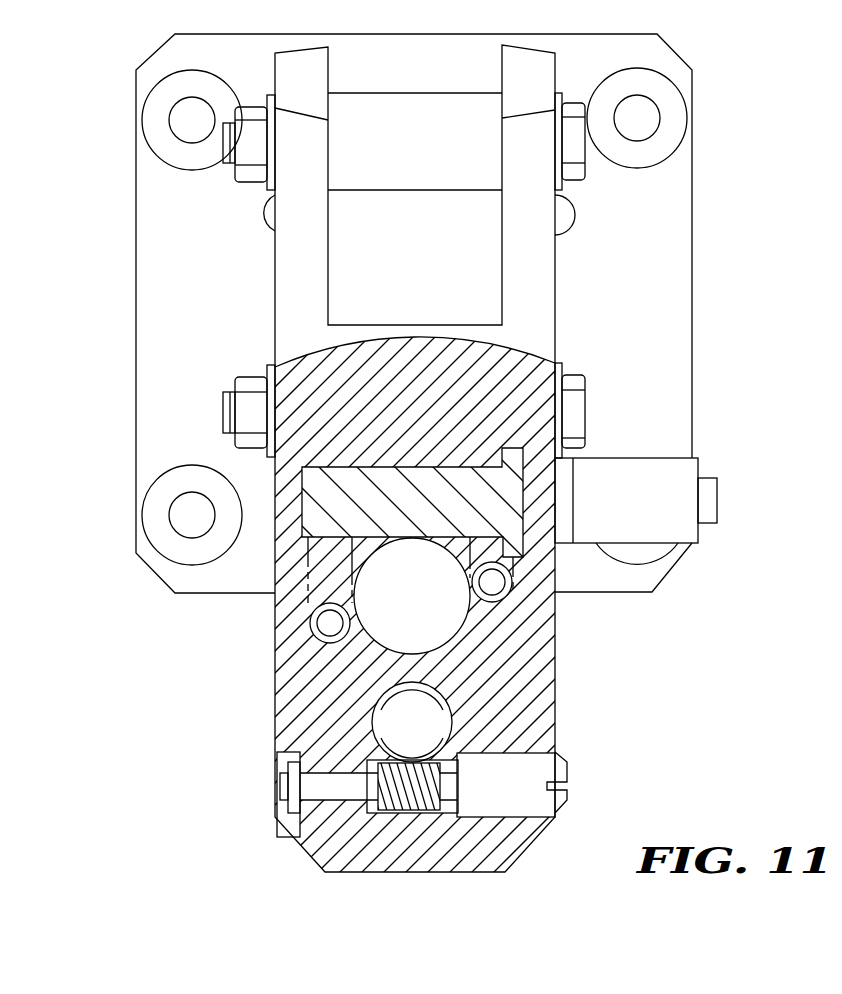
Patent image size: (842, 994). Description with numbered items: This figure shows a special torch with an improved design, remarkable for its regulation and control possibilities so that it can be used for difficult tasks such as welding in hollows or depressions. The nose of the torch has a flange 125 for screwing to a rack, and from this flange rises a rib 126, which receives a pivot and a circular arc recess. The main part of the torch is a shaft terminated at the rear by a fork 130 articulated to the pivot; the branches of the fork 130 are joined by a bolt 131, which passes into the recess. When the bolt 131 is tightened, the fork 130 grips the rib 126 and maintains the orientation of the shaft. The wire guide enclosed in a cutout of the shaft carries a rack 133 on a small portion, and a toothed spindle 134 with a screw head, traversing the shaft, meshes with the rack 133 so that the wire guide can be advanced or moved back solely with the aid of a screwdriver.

The flange 125 is at (148, 271).
The rib 126 is at (338, 276).
The fork 130 is at (568, 286).
The bolt 131 is at (402, 108).
The rack 133 is at (372, 722).
The toothed spindle 134 is at (543, 771).